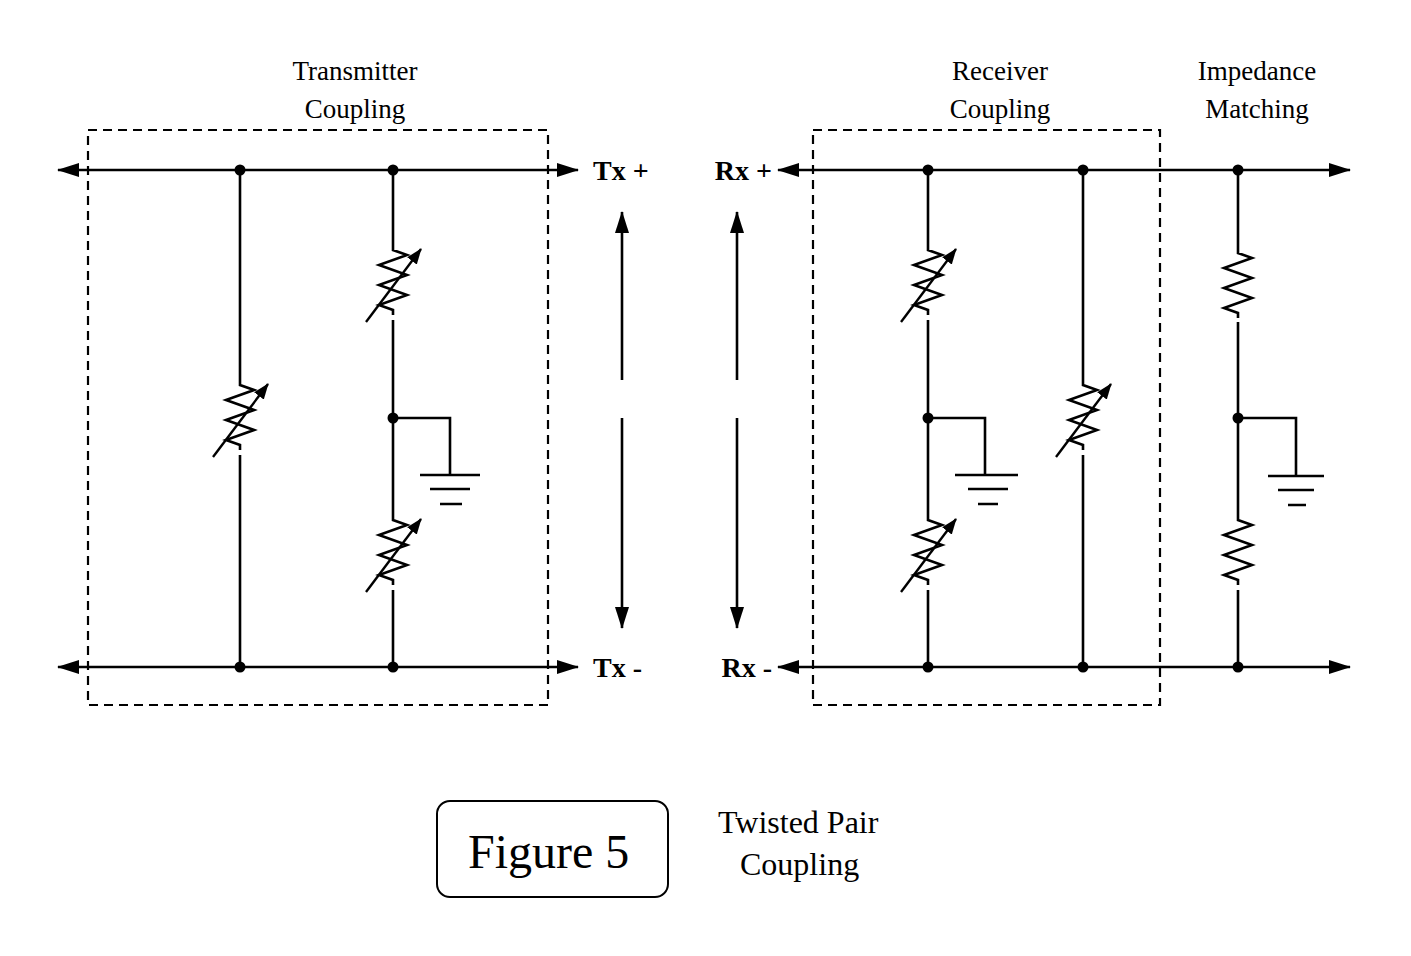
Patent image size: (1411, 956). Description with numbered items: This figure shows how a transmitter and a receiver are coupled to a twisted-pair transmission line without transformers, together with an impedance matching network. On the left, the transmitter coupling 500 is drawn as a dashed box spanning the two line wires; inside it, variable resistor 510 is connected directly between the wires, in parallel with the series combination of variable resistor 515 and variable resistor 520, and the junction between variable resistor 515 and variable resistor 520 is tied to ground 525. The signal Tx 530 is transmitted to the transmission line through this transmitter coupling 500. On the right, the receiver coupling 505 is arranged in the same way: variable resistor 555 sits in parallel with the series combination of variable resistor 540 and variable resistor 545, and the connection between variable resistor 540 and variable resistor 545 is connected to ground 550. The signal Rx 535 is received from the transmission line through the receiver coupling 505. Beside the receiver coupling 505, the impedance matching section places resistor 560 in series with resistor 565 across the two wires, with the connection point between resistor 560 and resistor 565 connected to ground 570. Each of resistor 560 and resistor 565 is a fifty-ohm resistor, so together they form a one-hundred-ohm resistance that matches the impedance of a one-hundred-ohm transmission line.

The transmitter coupling 500 is at (223, 126).
The receiver coupling 505 is at (888, 126).
The variable resistor 510 is at (200, 416).
The variable resistor 515 is at (352, 287).
The variable resistor 520 is at (352, 550).
The ground 525 is at (472, 456).
The signal Tx 530 is at (622, 420).
The signal Rx 535 is at (737, 420).
The variable resistor 540 is at (886, 288).
The variable resistor 545 is at (887, 552).
The ground 550 is at (1010, 504).
The variable resistor 555 is at (1042, 419).
The resistor 560 is at (1268, 290).
The resistor 565 is at (1268, 558).
The ground 570 is at (1330, 494).